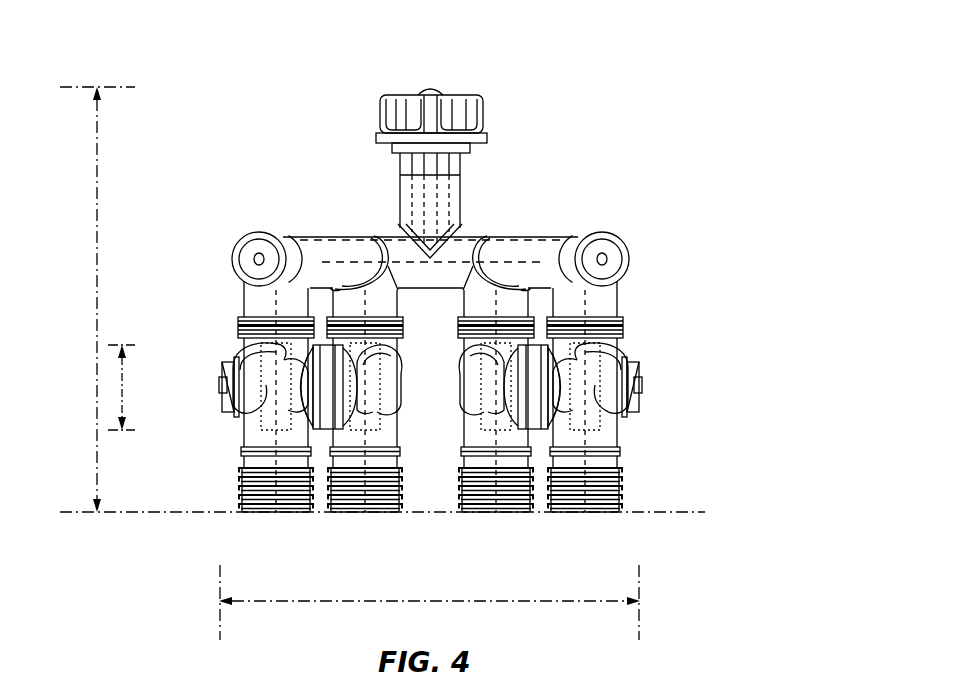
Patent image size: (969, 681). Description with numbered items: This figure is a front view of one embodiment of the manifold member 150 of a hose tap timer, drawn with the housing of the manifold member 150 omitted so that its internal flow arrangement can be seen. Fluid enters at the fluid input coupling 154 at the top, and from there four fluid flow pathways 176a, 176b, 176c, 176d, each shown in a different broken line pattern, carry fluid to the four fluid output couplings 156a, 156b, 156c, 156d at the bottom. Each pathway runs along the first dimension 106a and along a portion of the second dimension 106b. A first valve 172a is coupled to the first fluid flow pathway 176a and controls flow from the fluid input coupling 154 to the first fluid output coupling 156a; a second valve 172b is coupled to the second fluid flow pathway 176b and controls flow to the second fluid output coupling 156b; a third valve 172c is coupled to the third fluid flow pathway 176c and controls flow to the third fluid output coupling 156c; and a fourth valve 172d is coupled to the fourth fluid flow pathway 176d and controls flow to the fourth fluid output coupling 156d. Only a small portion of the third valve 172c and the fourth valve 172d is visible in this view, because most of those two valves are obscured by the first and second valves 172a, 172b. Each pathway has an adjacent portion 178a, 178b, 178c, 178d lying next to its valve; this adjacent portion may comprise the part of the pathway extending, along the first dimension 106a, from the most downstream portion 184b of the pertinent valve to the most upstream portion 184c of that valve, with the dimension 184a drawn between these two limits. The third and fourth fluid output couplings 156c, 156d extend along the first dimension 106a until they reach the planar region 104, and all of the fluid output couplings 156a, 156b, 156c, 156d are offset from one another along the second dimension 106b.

The manifold member 150 is at (186, 117).
The fluid input coupling 154 is at (452, 106).
The planar region 104 is at (190, 513).
The first dimension 106a is at (97, 167).
The second dimension 106b is at (493, 601).
The first fluid output coupling 156a is at (245, 492).
The second fluid output coupling 156b is at (610, 500).
The third fluid output coupling 156c is at (370, 490).
The fourth fluid output coupling 156d is at (518, 490).
The first valve 172a is at (353, 392).
The second valve 172b is at (515, 393).
The third valve 172c is at (217, 367).
The fourth valve 172d is at (633, 397).
The first fluid flow pathway 176a is at (262, 436).
The second fluid flow pathway 176b is at (590, 303).
The third fluid flow pathway 176c is at (367, 263).
The fourth fluid flow pathway 176d is at (487, 268).
The adjacent portion of first fluid flow pathway 178a is at (262, 388).
The adjacent portion of second fluid flow pathway 178b is at (603, 412).
The adjacent portion of third fluid flow pathway 178c is at (396, 384).
The adjacent portion of fourth fluid flow pathway 178d is at (475, 418).
The handle spacing dimension 184a is at (122, 387).
The most downstream portion 184b is at (137, 328).
The most upstream portion 184c is at (109, 430).